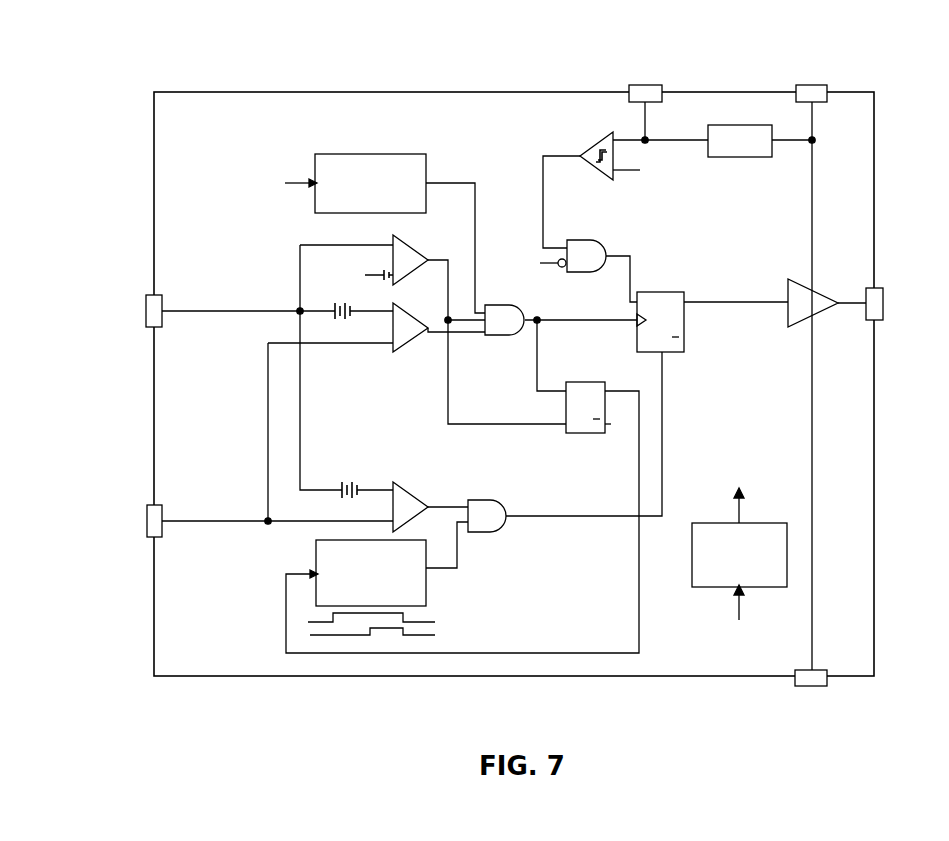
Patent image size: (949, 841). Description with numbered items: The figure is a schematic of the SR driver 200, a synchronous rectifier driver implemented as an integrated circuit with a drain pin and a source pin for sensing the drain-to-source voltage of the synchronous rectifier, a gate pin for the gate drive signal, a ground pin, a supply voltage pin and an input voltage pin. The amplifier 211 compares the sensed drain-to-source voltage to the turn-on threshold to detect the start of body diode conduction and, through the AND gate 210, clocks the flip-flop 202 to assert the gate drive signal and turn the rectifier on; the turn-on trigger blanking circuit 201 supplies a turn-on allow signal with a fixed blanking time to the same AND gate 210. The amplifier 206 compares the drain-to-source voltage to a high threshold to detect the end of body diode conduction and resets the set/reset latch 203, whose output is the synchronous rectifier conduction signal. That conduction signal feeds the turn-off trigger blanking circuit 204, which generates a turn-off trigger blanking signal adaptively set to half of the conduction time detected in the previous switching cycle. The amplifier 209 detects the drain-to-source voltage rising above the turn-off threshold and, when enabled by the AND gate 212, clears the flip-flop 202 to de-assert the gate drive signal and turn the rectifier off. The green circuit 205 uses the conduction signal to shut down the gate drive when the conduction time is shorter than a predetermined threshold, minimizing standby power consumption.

The SR driver 200 is at (233, 92).
The turn-on trigger blanking circuit 201 is at (347, 154).
The flip-flop 202 is at (669, 292).
The set/reset latch 203 is at (588, 433).
The turn-off trigger blanking circuit 204 is at (427, 593).
The green circuit 205 is at (699, 587).
The amplifier 206 is at (418, 270).
The amplifier 209 is at (410, 494).
The AND gate 210 is at (512, 337).
The amplifier 211 is at (407, 346).
The AND gate 212 is at (485, 500).